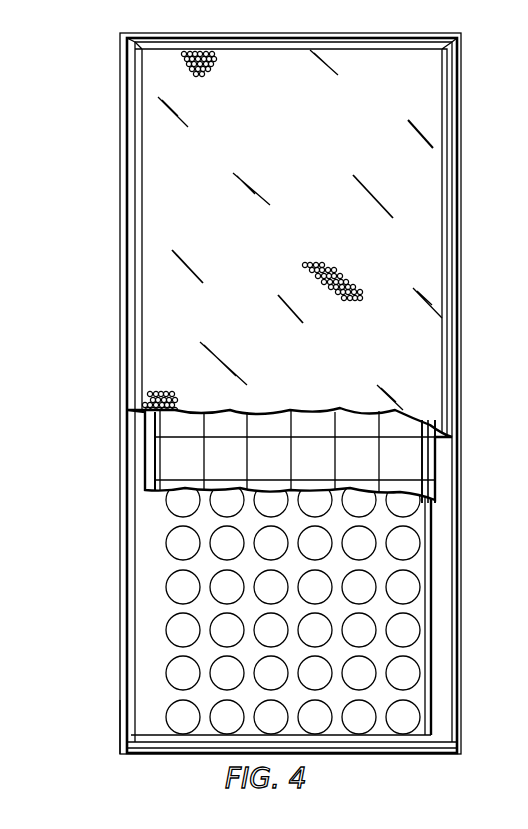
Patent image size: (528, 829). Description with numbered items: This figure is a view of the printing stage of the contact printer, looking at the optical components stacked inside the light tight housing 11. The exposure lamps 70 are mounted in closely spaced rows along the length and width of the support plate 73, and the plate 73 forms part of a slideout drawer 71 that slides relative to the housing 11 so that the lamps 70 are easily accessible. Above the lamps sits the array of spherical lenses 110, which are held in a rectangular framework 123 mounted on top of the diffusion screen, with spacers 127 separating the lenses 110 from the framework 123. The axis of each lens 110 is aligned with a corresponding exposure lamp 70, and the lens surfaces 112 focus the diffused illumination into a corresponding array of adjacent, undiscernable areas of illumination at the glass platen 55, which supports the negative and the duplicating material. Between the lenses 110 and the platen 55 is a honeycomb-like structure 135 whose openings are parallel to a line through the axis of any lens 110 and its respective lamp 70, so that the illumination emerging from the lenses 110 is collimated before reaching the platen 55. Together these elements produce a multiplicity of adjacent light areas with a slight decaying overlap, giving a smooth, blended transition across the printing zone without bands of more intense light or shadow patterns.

The light tight housing 11 is at (459, 659).
The glass platen 55 is at (153, 330).
The exposure lamps 70 is at (160, 686).
The slideout drawer 71 is at (114, 756).
The support plate 73 is at (254, 586).
The spherical lenses 110 is at (424, 489).
The lens surfaces 112 is at (416, 456).
The rectangular framework 123 is at (260, 455).
The spacers 127 is at (295, 451).
The honeycomb-like structure 135 is at (140, 388).